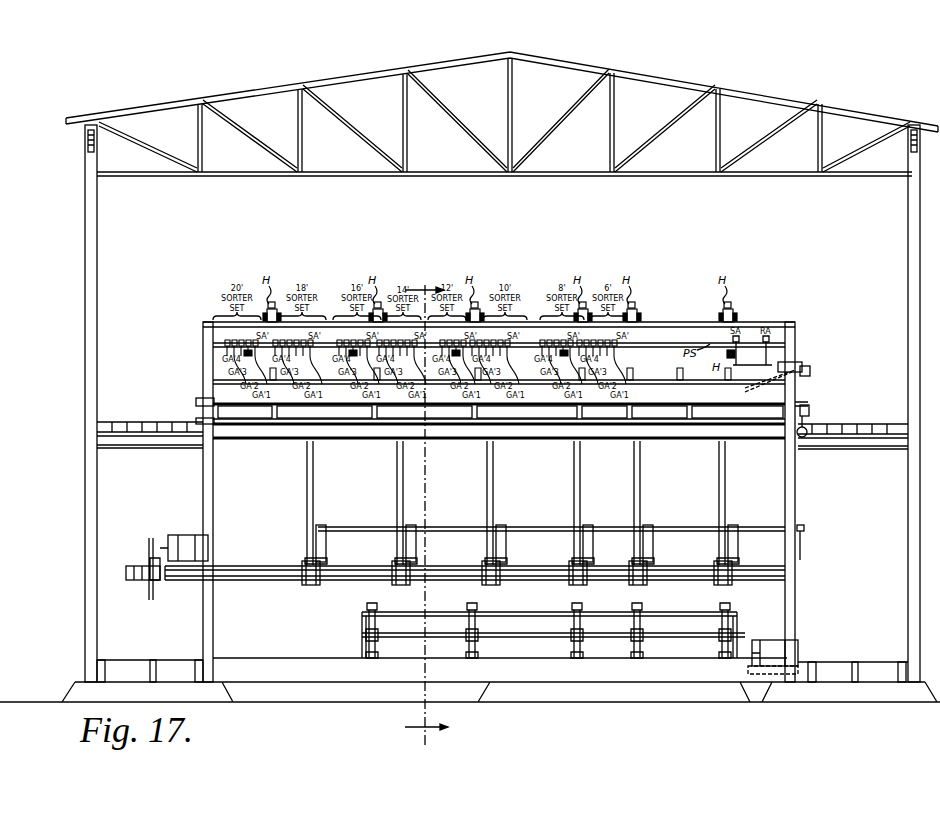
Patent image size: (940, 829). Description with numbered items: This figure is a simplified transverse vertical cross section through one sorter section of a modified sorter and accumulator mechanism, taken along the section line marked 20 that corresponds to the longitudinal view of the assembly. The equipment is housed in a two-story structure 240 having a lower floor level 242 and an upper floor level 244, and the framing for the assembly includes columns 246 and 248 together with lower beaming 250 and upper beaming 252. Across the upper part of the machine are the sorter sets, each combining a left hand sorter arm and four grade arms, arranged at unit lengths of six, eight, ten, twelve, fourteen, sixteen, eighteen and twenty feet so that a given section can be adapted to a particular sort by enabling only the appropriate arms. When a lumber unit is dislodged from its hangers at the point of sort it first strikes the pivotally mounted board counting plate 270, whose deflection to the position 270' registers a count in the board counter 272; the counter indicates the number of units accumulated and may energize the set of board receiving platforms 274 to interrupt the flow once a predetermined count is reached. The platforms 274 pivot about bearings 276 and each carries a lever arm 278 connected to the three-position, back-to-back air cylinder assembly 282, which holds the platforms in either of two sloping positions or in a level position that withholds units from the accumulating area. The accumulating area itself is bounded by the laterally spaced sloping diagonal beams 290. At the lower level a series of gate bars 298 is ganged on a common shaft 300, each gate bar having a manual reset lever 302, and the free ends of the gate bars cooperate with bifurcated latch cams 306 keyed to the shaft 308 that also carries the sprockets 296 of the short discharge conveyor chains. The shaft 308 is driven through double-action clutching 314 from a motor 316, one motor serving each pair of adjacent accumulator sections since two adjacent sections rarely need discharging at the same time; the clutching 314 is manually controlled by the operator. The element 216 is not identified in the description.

The two-story structure 240 is at (510, 199).
The lower floor level 242 is at (127, 660).
The upper floor level 244 is at (152, 418).
The column 246 is at (203, 498).
The column 248 is at (795, 497).
The lower beaming 250 is at (293, 581).
The upper beaming 252 is at (690, 328).
The board counting plate 270 is at (804, 354).
The board counter 272 is at (810, 368).
The deflected position of board counting plate 270' is at (794, 381).
The rail support 216 is at (796, 408).
The lever arm 278 is at (809, 415).
The three-position back-to-back air cylinder assembly 282 is at (804, 437).
The board receiving platform 274 is at (262, 420).
The bearing 276 is at (200, 402).
The sloping diagonal beam 290 is at (307, 498).
The gate bar 298 is at (326, 545).
The common shaft 300 is at (368, 519).
The manual reset lever 302 is at (804, 536).
The latch cam 306 is at (314, 587).
The shaft 308 is at (352, 569).
The sprocket 296 is at (302, 589).
The double-action clutching 314 is at (134, 566).
The motor 316 is at (173, 536).
The section line 20 is at (425, 508).